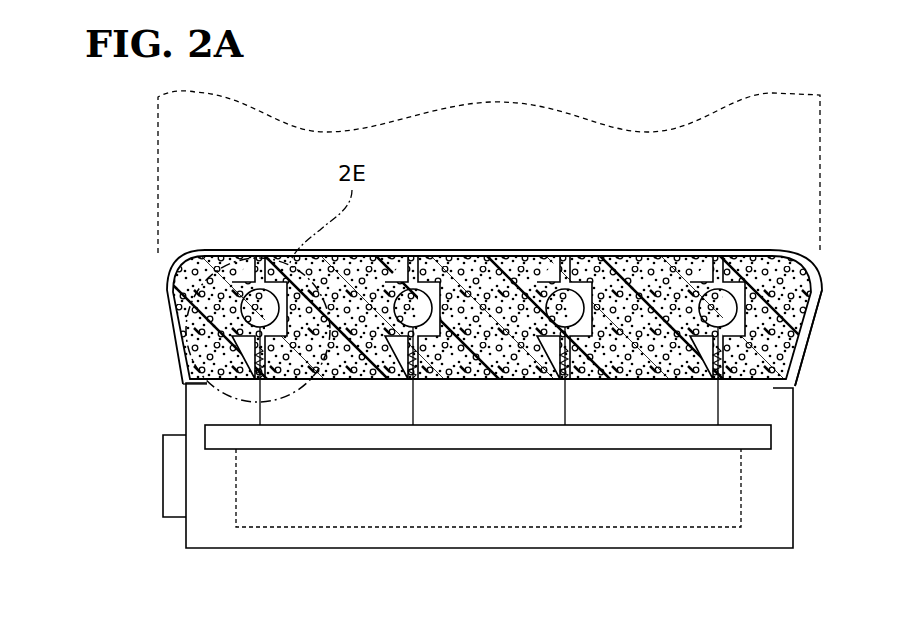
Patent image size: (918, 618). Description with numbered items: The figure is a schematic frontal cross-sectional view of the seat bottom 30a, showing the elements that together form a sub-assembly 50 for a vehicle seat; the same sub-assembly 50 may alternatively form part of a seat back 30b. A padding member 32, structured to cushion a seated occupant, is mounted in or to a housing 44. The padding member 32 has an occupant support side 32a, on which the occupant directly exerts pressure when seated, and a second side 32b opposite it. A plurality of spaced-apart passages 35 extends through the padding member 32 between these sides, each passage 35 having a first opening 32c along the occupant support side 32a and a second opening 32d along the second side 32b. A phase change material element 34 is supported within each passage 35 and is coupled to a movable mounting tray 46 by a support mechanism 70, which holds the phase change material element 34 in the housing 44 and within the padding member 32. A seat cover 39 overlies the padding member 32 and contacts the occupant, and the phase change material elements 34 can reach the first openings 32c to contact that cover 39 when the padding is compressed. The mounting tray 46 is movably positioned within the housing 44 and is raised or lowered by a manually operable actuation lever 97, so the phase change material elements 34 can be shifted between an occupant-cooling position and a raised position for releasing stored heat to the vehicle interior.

The sub-assembly 50 is at (138, 258).
The seat bottom 30a is at (178, 385).
The seat back 30b is at (383, 145).
The padding member 32 is at (175, 303).
The occupant support side 32a is at (750, 258).
The second side 32b is at (743, 383).
The first opening 32c is at (567, 258).
The second opening 32d is at (567, 380).
The phase change material element 34 is at (258, 303).
The passage 35 is at (240, 338).
The seat cover 39 is at (822, 310).
The housing 44 is at (797, 400).
The mounting tray 46 is at (367, 449).
The support mechanism 70 is at (235, 400).
The actuation lever 97 is at (170, 477).